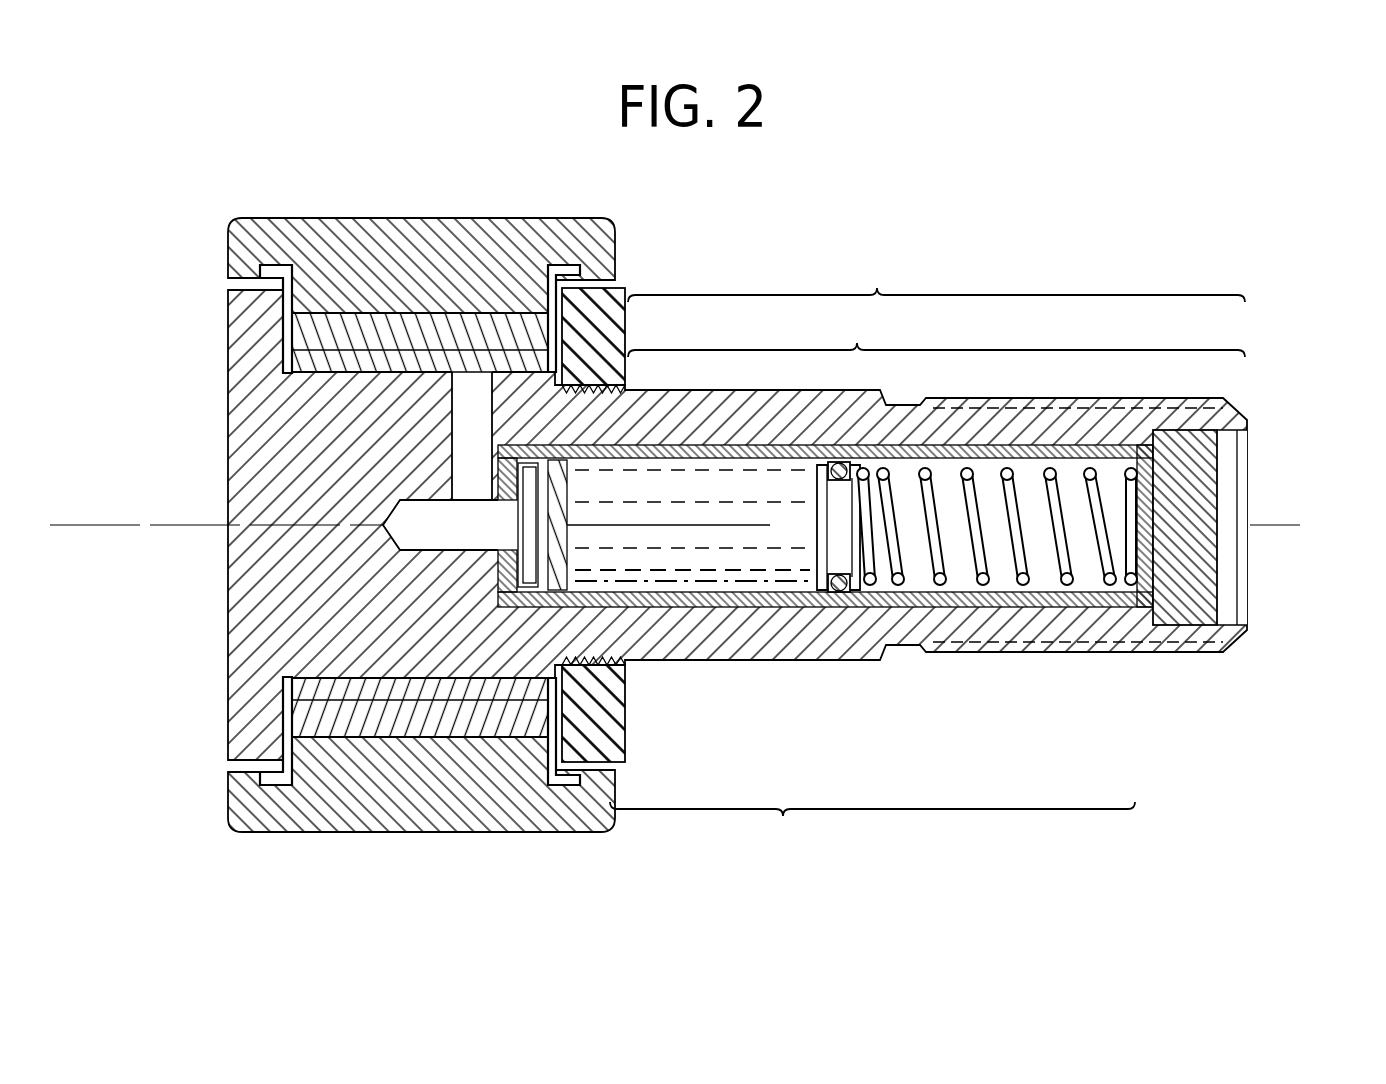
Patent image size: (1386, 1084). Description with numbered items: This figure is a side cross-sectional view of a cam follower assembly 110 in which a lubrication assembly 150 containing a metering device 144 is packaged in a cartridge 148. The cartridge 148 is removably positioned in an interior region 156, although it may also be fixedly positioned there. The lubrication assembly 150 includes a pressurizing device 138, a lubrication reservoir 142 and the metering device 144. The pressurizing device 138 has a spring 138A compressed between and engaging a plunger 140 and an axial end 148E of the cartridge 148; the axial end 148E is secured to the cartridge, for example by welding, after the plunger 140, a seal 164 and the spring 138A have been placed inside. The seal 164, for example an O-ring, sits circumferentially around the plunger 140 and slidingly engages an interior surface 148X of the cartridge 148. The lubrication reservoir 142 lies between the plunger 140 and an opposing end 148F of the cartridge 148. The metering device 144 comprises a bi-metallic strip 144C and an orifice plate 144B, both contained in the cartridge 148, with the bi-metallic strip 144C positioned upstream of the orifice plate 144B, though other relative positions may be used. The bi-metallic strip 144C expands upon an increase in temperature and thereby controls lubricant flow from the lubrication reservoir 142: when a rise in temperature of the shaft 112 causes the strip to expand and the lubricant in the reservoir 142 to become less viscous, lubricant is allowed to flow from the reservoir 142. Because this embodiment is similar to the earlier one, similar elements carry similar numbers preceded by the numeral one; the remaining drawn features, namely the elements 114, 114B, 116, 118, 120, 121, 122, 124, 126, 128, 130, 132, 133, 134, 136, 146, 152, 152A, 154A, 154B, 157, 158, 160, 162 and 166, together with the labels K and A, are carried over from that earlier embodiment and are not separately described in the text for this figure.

The cam follower assembly 110 is at (755, 228).
The shaft 112 is at (243, 483).
The housing end wall 114 is at (252, 350).
The housing face 114B is at (243, 320).
The cylinder portion 116 is at (936, 331).
The bearing seat 118 is at (243, 402).
The cylinder body 120 is at (640, 388).
The cylinder outer surface 121 is at (605, 342).
The tensioner arm assembly 122 is at (936, 276).
The pulley outer ring 124 is at (263, 228).
The pulley surface 126 is at (315, 218).
The bearing sleeve 128 is at (397, 316).
The bearing retainer 130 is at (258, 292).
The bearing cavity 132 is at (447, 316).
The axial bore 133 is at (507, 580).
The fluid passage 134 is at (460, 443).
The radial bore 136 is at (472, 383).
The pressurizing device 138 is at (995, 610).
The spring 138A is at (850, 590).
The plunger 140 is at (824, 608).
The lubrication reservoir 142 is at (757, 600).
The metering device 144 is at (583, 467).
The orifice plate 144B is at (570, 580).
The bi-metallic strip 144C is at (540, 593).
The end plug 146 is at (1197, 587).
The cartridge 148 is at (1087, 600).
The axial end 148E is at (1152, 575).
The opposing end 148F is at (483, 618).
The interior surface 148X is at (1069, 457).
The lubrication assembly 150 is at (872, 827).
The lock nut 152 is at (628, 325).
The lock nut flange 152A is at (563, 288).
The bearing retainer ring 154A is at (600, 290).
The bearing retainer ring 154B is at (232, 265).
The interior region 156 is at (1153, 398).
The end cap chamfer 157 is at (1250, 415).
The piston shoulder 158 is at (463, 627).
The cylinder outer surface 160 is at (768, 390).
The end cap wall 162 is at (1200, 653).
The seal 164 is at (880, 402).
The plug face 166 is at (1203, 484).
The direction of force K is at (1070, 266).
The axis A is at (1330, 525).